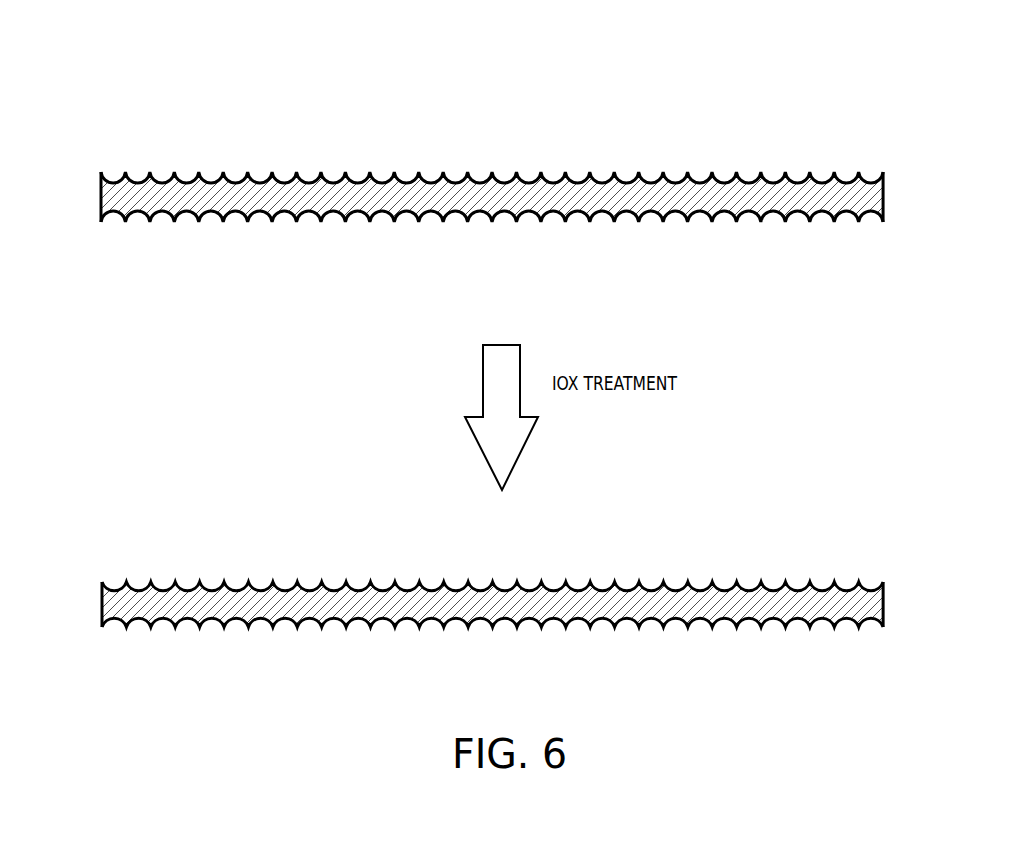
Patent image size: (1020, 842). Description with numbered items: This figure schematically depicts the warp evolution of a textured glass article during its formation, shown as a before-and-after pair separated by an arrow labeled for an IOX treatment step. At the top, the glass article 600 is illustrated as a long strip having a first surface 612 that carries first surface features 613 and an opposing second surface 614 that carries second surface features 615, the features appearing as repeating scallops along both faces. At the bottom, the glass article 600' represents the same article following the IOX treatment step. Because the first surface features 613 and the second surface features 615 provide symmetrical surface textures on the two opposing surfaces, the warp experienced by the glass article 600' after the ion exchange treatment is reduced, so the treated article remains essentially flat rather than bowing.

The glass article 600 is at (473, 140).
The glass article following IOX treatment 600' is at (481, 518).
The first surface 612 is at (101, 191).
The first surface features 613 is at (272, 172).
The second surface 614 is at (883, 222).
The second surface features 615 is at (321, 222).